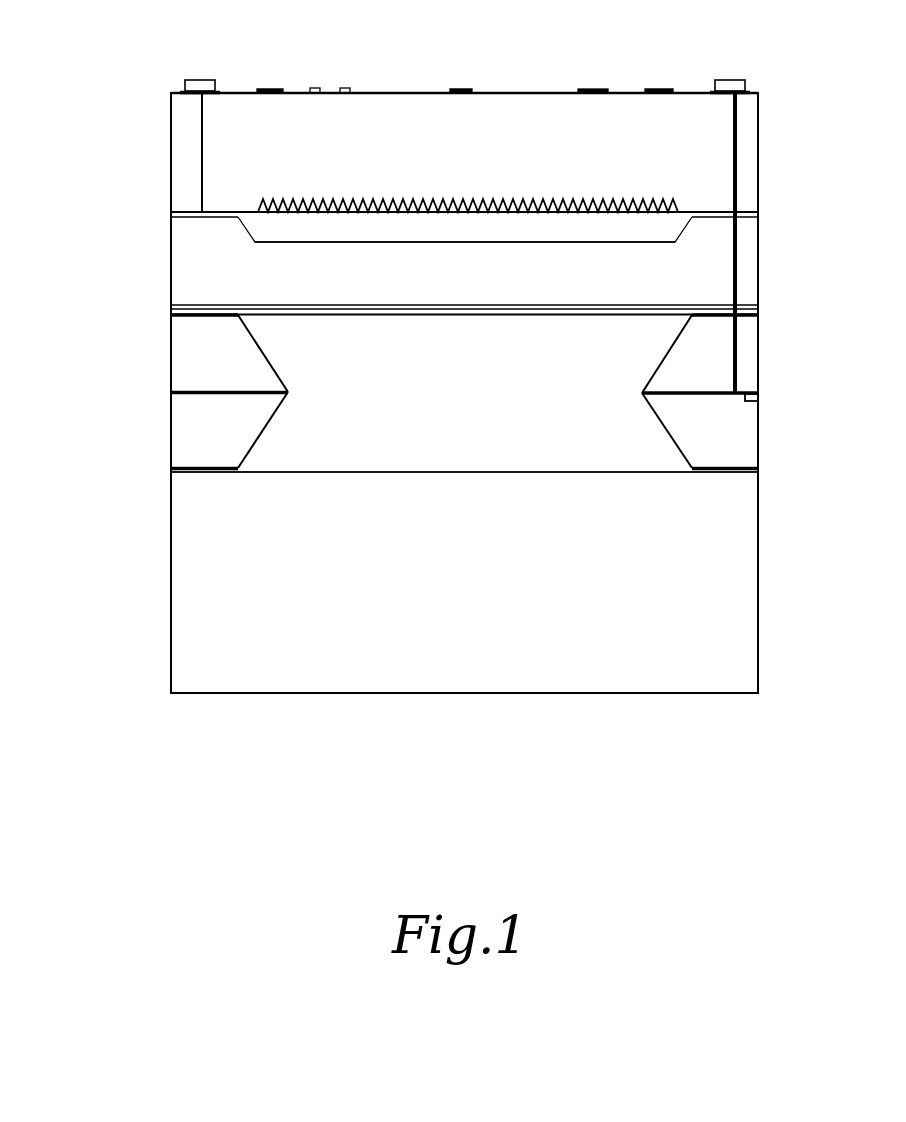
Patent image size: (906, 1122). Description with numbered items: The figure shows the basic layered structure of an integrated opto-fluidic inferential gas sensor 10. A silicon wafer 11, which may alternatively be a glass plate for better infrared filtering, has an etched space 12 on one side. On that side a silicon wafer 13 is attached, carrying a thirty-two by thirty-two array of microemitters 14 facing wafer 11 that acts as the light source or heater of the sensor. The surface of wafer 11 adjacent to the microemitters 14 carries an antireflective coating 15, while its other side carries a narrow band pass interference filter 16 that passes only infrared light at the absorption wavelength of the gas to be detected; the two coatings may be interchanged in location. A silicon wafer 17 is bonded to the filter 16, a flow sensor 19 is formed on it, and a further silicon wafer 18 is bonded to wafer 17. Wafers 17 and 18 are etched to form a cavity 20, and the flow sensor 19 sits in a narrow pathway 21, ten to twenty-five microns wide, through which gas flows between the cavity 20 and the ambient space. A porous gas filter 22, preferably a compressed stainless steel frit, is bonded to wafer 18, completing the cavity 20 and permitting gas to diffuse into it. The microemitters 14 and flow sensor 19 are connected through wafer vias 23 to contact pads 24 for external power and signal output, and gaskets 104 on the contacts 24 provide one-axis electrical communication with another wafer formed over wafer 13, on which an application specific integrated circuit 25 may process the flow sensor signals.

The inferential gas sensor 10 is at (118, 262).
The silicon wafer 11 is at (377, 287).
The etched space 12 is at (465, 230).
The silicon wafer 13 is at (503, 157).
The microemitters 14 is at (345, 199).
The antireflective coating 15 is at (540, 242).
The narrow band pass interference filter 16 is at (472, 305).
The silicon wafer 17 is at (250, 365).
The silicon wafer 18 is at (248, 436).
The flow sensor 19 is at (757, 400).
The cavity 20 is at (453, 399).
The pathway 21 is at (640, 393).
The porous gas filter 22 is at (450, 599).
The vias 23 is at (203, 145).
The contact pads 24 is at (172, 92).
The application specific integrated circuit 25 is at (592, 89).
The gaskets 104 is at (200, 80).